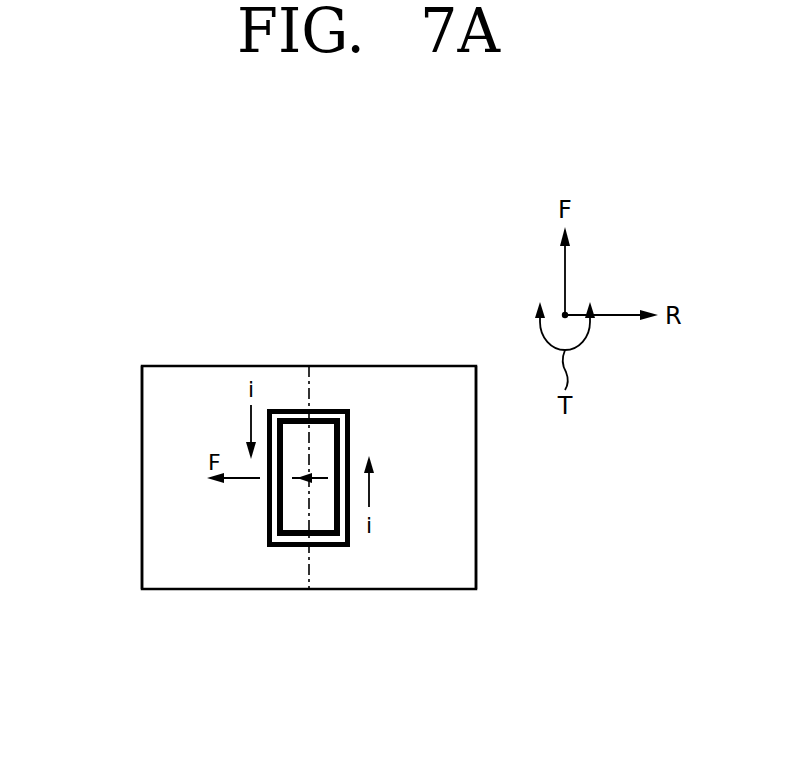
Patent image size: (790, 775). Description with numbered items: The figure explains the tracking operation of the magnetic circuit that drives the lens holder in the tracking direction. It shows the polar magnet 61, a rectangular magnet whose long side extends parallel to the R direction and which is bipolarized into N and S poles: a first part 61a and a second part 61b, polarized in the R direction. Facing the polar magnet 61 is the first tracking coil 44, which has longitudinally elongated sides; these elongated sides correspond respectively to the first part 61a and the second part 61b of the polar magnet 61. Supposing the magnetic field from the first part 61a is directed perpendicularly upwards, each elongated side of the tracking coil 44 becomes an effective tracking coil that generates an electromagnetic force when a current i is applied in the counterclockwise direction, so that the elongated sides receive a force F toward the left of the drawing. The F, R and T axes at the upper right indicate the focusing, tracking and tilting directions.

The first polar magnet 61 is at (420, 338).
The first part of first polar magnet 61a is at (464, 530).
The second part of first polar magnet 61b is at (151, 421).
The first tracking coil 44 is at (293, 549).